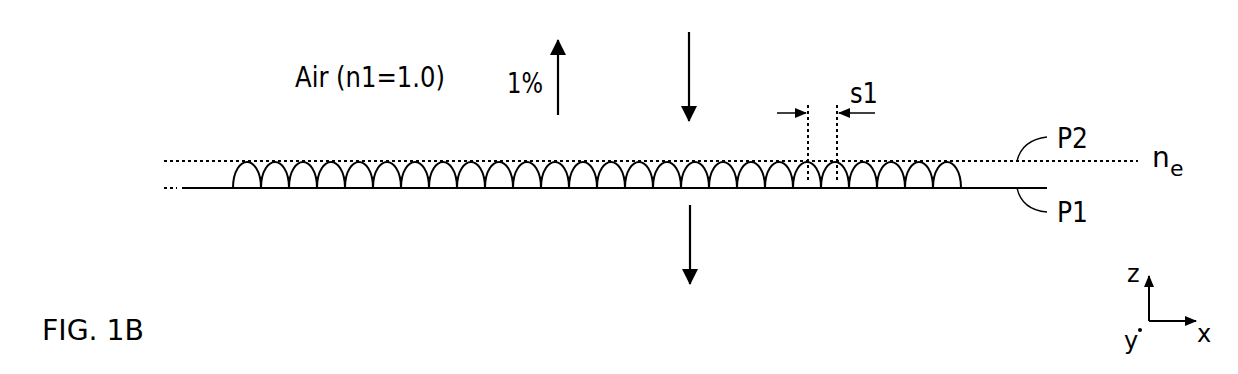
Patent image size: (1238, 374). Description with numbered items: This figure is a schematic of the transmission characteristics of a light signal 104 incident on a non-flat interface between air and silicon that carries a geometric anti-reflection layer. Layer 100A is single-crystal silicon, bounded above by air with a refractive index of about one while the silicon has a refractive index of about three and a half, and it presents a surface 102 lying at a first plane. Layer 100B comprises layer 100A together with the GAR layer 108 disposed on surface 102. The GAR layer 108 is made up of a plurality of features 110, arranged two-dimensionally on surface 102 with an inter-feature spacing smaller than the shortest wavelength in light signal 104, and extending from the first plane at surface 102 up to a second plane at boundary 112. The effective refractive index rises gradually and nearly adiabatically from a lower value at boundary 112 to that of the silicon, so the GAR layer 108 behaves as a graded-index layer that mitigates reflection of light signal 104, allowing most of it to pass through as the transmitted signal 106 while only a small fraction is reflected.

The layer 100B is at (214, 96).
The surface 102 is at (969, 191).
The light signal 104 is at (689, 55).
The transmitted signal 106 is at (690, 247).
The geometric anti-reflection layer 108 is at (503, 218).
The features 110 is at (472, 190).
The boundary 112 is at (938, 161).
The layer 100A is at (614, 235).